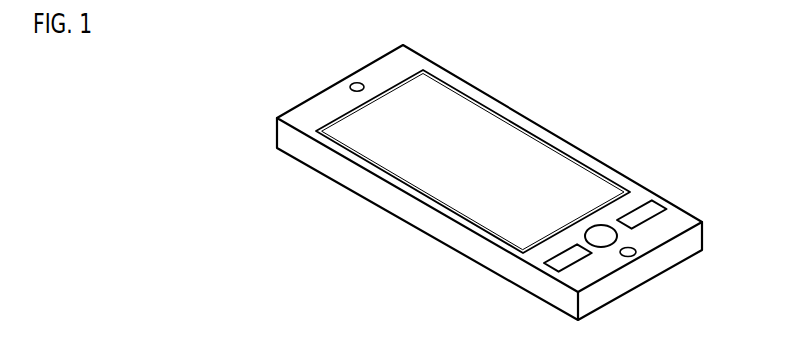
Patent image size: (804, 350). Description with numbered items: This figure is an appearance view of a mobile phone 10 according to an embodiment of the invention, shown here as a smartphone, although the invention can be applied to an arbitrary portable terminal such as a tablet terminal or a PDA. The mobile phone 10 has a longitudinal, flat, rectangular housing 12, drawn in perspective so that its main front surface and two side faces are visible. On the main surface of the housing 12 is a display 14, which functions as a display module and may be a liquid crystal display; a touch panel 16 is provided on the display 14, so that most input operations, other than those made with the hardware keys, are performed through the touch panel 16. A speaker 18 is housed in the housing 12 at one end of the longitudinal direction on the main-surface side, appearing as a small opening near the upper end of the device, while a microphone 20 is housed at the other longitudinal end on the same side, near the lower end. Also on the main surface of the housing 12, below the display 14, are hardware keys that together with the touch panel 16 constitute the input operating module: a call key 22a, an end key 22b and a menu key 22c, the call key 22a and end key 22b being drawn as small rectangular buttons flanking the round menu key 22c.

The mobile phone 10 is at (290, 68).
The housing 12 is at (393, 207).
The display 14 is at (455, 102).
The touch panel 16 is at (514, 139).
The speaker 18 is at (345, 86).
The microphone 20 is at (630, 257).
The call key 22a is at (557, 272).
The end key 22b is at (648, 205).
The menu key 22c is at (620, 237).